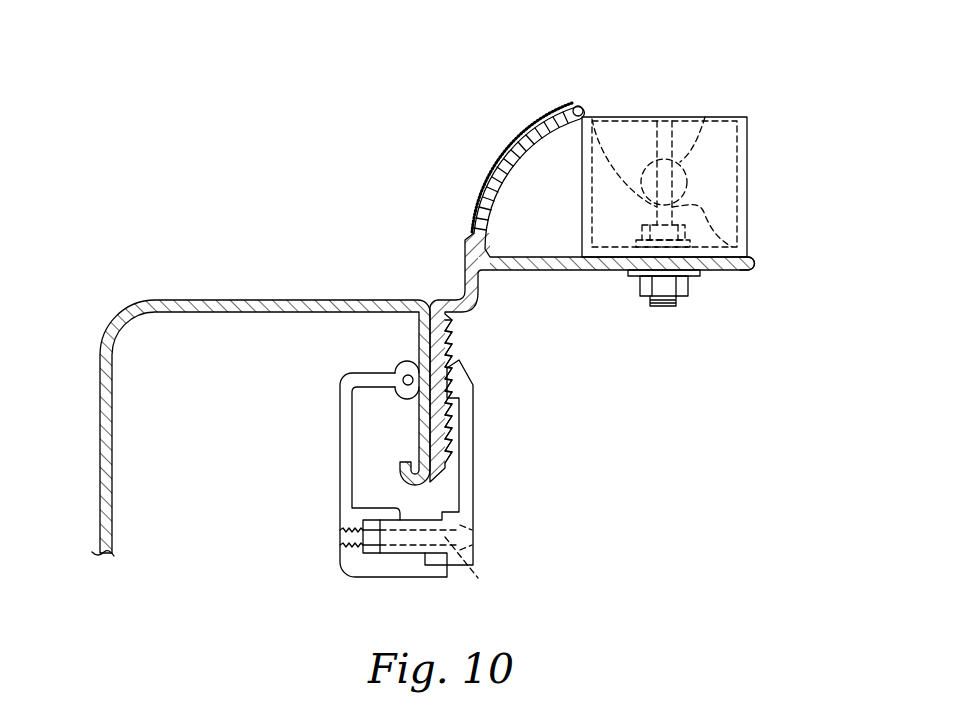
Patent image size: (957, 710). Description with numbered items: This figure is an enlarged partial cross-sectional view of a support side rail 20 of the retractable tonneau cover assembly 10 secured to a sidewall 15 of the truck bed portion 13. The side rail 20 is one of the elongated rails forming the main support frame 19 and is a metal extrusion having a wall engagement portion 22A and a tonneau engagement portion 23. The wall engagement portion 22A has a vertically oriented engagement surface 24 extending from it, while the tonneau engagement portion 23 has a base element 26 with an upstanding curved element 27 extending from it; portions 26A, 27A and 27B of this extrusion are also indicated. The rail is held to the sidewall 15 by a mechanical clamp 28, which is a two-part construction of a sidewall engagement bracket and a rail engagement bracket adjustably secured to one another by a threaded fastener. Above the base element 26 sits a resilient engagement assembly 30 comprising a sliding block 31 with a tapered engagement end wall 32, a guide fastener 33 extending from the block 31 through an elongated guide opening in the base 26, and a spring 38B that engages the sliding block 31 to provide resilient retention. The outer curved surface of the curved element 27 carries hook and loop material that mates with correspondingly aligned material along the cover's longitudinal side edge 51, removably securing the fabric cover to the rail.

The retractable tonneau cover assembly 10 is at (565, 260).
The bed portion 13 is at (235, 370).
The sidewall 15 is at (230, 298).
The main support frame 19 is at (553, 110).
The support side rail 20 is at (488, 193).
The wall engagement portion 22A is at (452, 338).
The tonneau engagement portion 23 is at (578, 280).
The engagement surface 24 is at (453, 427).
The base element 26 is at (732, 272).
The connecting web 26A is at (478, 305).
The curved element 27 is at (438, 410).
The clip first jaw 27A is at (350, 485).
The clip second jaw 27B is at (463, 485).
The mechanical clamp 28 is at (478, 578).
The resilient engagement assembly 30 is at (716, 212).
The sliding block 31 is at (763, 152).
The tapered engagement end wall 32 is at (720, 190).
The guide fastener 33 is at (683, 292).
The spring 38B is at (705, 117).
The longitudinal side edge 51 is at (497, 168).